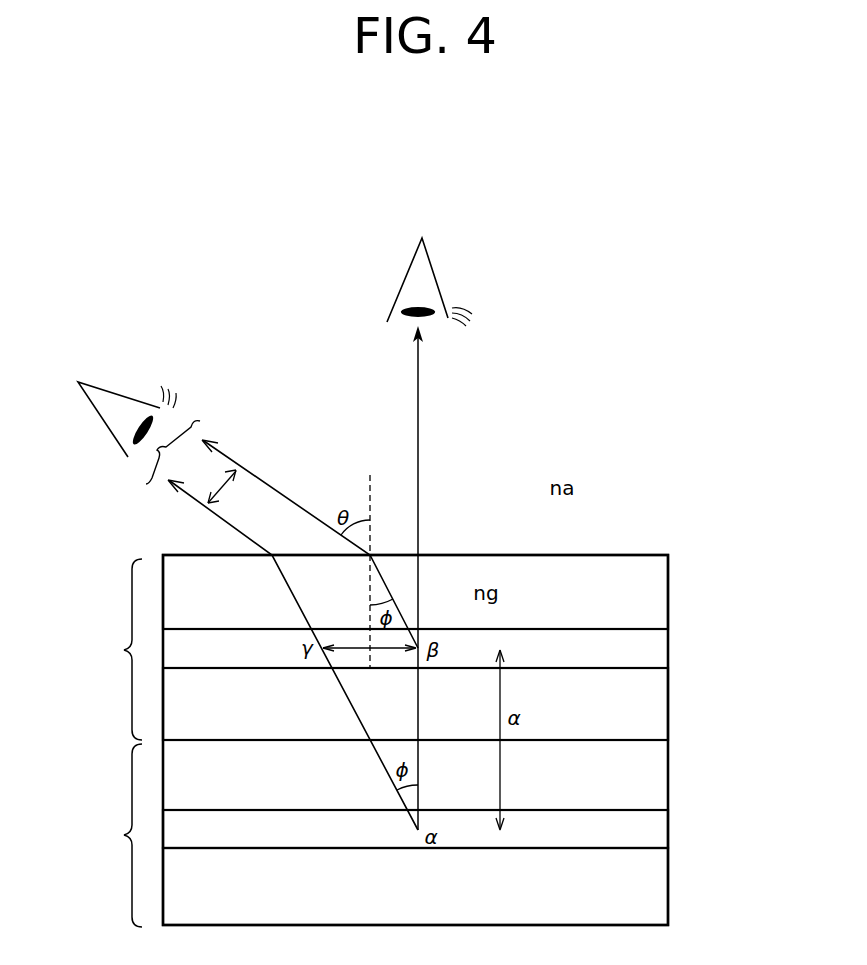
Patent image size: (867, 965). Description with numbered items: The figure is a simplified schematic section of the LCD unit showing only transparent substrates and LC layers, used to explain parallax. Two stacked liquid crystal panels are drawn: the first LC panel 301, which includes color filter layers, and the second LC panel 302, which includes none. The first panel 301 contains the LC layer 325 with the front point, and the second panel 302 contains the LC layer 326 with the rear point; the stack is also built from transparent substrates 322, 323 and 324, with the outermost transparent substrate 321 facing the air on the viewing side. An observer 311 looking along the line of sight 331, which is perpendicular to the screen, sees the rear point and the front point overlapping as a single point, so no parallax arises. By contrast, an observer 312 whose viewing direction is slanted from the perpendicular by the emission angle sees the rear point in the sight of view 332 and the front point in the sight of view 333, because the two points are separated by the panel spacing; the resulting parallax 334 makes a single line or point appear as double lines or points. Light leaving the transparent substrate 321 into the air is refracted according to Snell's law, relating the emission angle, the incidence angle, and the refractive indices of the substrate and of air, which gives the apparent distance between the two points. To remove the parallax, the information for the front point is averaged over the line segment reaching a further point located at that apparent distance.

The LC panel 301 is at (124, 650).
The second LC panel 302 is at (124, 835).
The observer 311 is at (429, 267).
The observer 312 is at (112, 406).
The transparent substrate 321 is at (661, 574).
The second layer 322 is at (661, 692).
The third layer 323 is at (661, 760).
The fourth layer 324 is at (661, 887).
The LC layer 325 is at (661, 643).
The LC layer 326 is at (661, 825).
The line of sight 331 is at (421, 430).
The sight of view 332 is at (238, 462).
The sight of view 333 is at (197, 503).
The parallax 334 is at (249, 486).